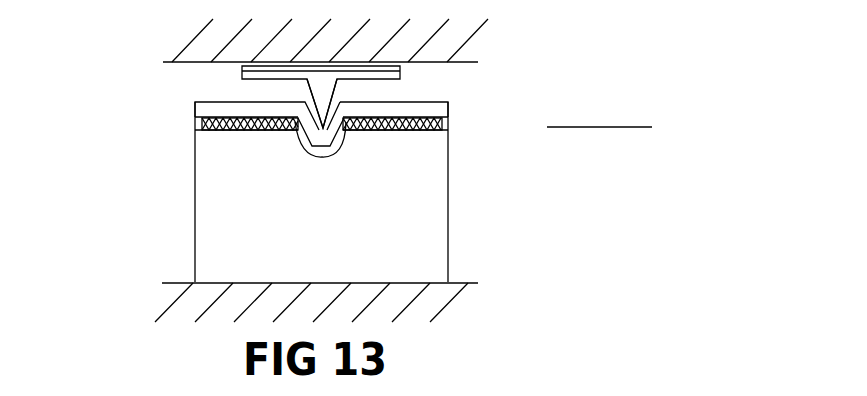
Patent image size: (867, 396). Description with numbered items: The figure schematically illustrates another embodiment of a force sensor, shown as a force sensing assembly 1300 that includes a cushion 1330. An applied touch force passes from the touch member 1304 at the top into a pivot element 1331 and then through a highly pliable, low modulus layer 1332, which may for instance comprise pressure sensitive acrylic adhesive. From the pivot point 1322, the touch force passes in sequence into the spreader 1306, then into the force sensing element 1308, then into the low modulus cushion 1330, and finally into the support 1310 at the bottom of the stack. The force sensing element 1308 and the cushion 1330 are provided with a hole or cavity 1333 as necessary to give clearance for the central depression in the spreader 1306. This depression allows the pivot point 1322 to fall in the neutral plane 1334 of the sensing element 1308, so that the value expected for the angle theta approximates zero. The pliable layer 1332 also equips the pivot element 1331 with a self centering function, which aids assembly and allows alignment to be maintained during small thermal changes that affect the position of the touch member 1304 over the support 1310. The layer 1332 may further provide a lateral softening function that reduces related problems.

The force sensing assembly 1300 is at (160, 196).
The touch member 1304 is at (471, 62).
The spreader 1306 is at (201, 102).
The force sensing element 1308 is at (201, 123).
The support 1310 is at (447, 283).
The pivot point 1322 is at (330, 145).
The cushion 1330 is at (447, 198).
The pivot element 1331 is at (383, 80).
The pliable layer 1332 is at (400, 68).
The cavity 1333 is at (320, 146).
The neutral plane 1334 is at (594, 127).